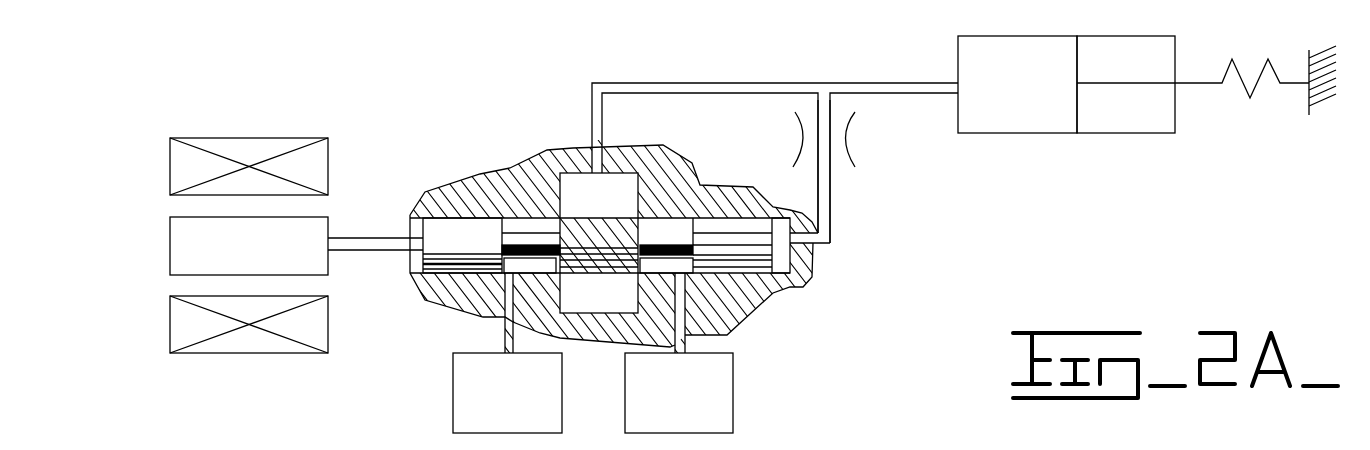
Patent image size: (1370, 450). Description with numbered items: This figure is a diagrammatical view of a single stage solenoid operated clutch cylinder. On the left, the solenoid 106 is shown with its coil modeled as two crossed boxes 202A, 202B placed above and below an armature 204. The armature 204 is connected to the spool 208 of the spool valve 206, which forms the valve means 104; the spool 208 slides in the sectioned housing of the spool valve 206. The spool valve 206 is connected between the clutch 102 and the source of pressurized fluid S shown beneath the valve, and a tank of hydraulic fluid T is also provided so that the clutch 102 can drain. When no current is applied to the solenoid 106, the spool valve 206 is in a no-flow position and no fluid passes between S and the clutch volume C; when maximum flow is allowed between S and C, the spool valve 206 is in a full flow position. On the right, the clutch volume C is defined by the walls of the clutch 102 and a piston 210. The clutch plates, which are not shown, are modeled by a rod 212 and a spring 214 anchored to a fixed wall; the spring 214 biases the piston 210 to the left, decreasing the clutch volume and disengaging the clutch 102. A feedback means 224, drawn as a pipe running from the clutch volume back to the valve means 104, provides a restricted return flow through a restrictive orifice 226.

The clutch 102 is at (1147, 159).
The valve means 104 is at (675, 258).
The solenoid 106 is at (210, 251).
The coil 202A is at (240, 137).
The coil 202B is at (240, 353).
The armature 204 is at (170, 223).
The spool valve 206 is at (513, 168).
The spool 208 is at (423, 254).
The piston 210 is at (1077, 107).
The rod 212 is at (1127, 87).
The spring 214 is at (1250, 98).
The feedback means 224 is at (882, 187).
The restrictive orifice 226 is at (810, 137).